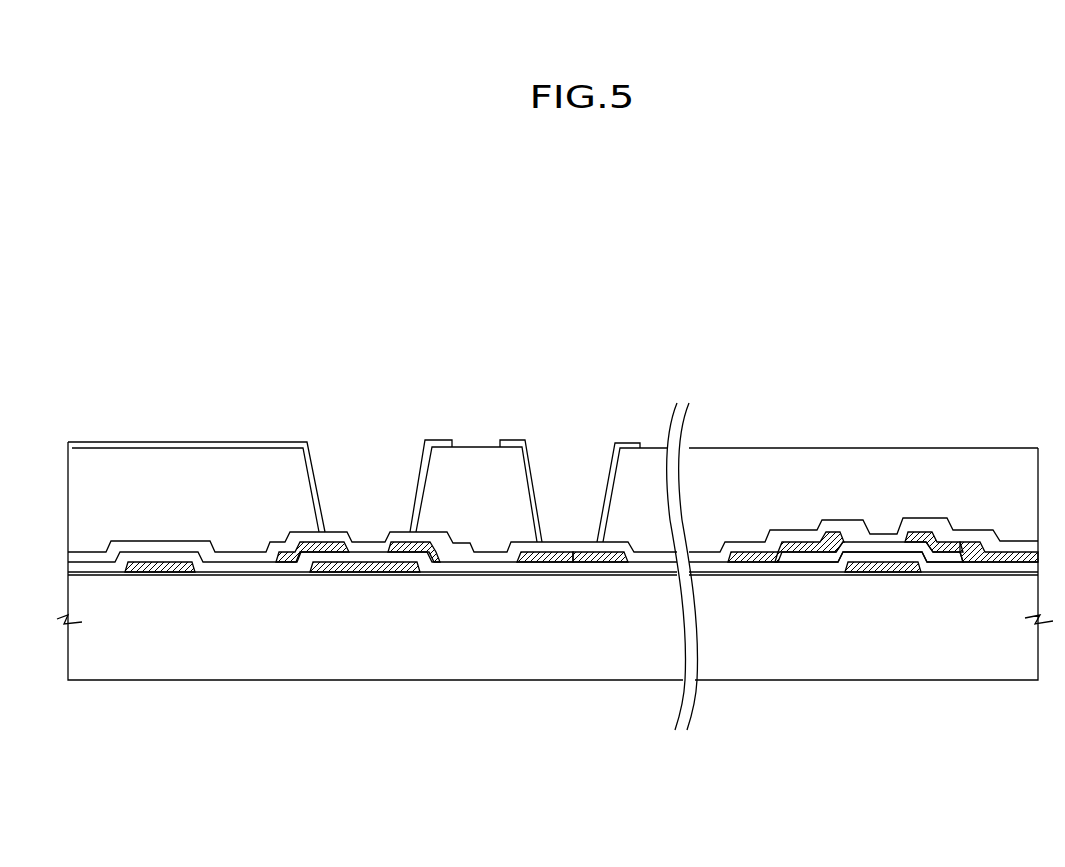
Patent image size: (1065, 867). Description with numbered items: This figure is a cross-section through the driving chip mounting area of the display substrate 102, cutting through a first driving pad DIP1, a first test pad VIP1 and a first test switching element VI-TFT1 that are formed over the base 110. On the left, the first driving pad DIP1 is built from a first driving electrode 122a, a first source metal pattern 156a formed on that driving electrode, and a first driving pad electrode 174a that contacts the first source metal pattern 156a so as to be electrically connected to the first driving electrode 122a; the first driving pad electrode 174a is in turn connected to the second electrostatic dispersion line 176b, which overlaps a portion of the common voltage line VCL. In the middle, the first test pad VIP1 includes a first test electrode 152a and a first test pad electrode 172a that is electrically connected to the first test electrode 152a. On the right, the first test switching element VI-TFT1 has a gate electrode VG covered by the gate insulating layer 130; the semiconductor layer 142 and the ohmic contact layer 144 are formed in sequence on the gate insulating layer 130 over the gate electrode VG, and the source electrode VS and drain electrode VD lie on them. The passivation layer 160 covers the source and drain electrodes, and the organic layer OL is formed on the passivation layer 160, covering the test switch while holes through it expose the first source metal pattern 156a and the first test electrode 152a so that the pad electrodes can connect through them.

The display substrate 102 is at (600, 338).
The base substrate 110 is at (240, 638).
The gate insulating layer 130 is at (795, 562).
The common voltage line VCL is at (157, 574).
The first source metal pattern 156a is at (355, 570).
The first driving electrode 122a is at (365, 553).
The first driving pad electrode 174a is at (384, 548).
The first driving pad DIP1 is at (361, 668).
The first test electrode 152a is at (532, 560).
The first test pad electrode 172a is at (587, 562).
The first test pad VIP1 is at (567, 673).
The passivation layer 160 is at (745, 550).
The gate electrode VG is at (880, 568).
The ohmic contact layer 144 is at (935, 556).
The drain electrode VD is at (822, 548).
The source electrode VS is at (922, 538).
The semiconductor layer 142 is at (958, 556).
The first test switching element VI-TFT1 is at (883, 663).
The second electrostatic dispersion line 176b is at (190, 442).
The organic layer OL is at (707, 527).